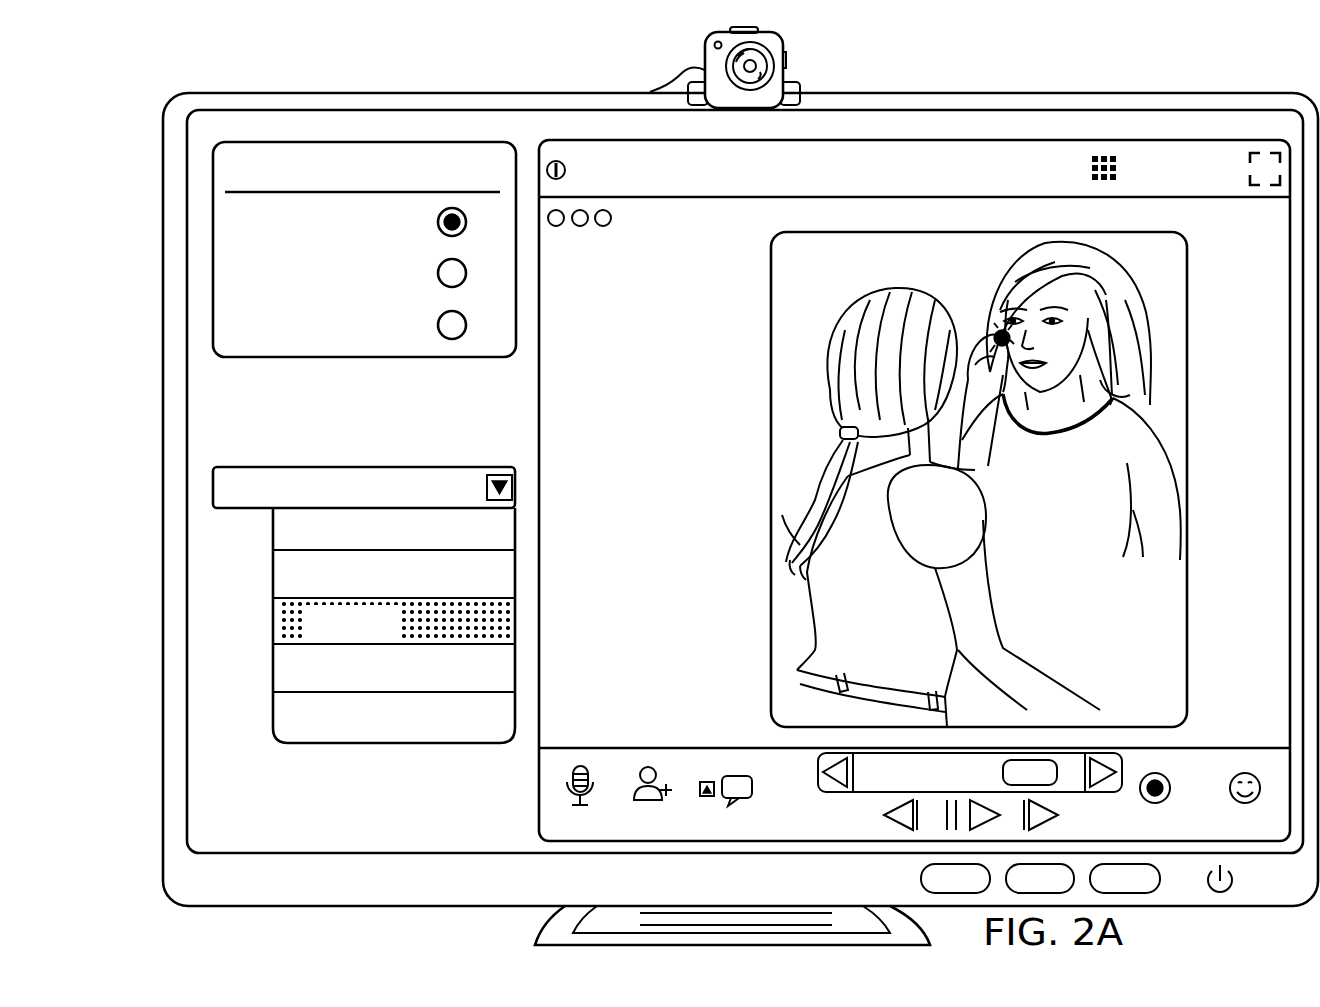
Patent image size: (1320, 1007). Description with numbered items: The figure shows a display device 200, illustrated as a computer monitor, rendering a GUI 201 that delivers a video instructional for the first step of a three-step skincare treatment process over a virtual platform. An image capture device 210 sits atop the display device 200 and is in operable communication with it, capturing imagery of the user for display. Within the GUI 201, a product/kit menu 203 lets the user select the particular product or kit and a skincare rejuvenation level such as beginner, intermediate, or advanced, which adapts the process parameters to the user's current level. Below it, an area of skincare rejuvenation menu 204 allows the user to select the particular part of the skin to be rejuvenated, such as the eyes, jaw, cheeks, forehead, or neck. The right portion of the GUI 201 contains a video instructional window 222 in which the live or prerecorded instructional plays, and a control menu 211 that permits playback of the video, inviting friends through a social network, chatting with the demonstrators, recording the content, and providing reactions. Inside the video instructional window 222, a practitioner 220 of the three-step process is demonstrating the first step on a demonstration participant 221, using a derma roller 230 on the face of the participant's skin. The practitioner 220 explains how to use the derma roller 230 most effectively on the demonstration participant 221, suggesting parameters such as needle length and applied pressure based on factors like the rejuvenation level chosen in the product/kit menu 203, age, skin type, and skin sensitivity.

The display device 200 is at (153, 212).
The GUI 201 is at (208, 771).
The product/kit menu 203 is at (518, 272).
The area of skincare rejuvenation menu 204 is at (495, 466).
The image capture device 210 is at (786, 52).
The control menu 211 is at (666, 732).
The practitioner 220 is at (890, 594).
The demonstration participant 221 is at (1088, 495).
The video instructional window 222 is at (771, 395).
The derma roller 230 is at (993, 332).